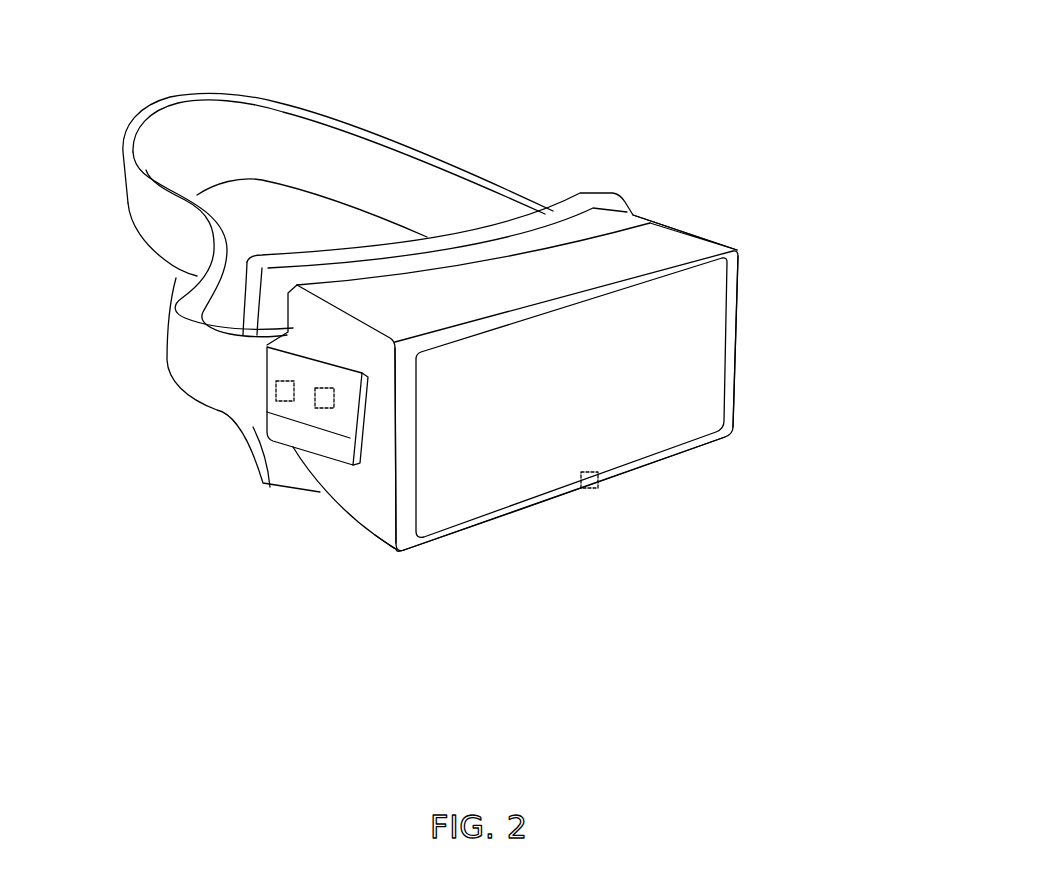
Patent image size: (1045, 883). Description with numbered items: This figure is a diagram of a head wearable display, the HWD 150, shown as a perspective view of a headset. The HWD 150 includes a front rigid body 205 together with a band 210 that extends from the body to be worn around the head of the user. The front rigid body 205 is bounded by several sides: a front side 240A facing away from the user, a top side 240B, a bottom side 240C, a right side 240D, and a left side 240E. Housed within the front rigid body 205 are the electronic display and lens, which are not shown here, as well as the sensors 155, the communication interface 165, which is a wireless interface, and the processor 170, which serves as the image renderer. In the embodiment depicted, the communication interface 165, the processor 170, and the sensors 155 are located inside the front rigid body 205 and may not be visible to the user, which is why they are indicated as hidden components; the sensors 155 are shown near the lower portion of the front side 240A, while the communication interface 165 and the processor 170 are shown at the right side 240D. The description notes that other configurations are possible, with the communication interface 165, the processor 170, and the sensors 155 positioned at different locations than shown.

The HWD 150 is at (88, 37).
The band 210 is at (438, 158).
The front rigid body 205 is at (737, 245).
The front side 240A is at (660, 436).
The top side 240B is at (349, 292).
The bottom side 240C is at (318, 537).
The right side 240D is at (367, 497).
The left side 240E is at (708, 228).
The communication interface 165 is at (260, 386).
The processor 170 is at (298, 419).
The sensors 155 is at (596, 507).